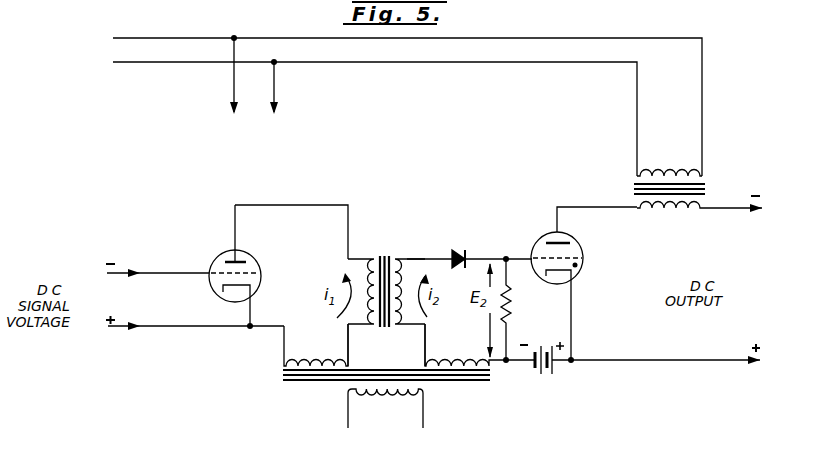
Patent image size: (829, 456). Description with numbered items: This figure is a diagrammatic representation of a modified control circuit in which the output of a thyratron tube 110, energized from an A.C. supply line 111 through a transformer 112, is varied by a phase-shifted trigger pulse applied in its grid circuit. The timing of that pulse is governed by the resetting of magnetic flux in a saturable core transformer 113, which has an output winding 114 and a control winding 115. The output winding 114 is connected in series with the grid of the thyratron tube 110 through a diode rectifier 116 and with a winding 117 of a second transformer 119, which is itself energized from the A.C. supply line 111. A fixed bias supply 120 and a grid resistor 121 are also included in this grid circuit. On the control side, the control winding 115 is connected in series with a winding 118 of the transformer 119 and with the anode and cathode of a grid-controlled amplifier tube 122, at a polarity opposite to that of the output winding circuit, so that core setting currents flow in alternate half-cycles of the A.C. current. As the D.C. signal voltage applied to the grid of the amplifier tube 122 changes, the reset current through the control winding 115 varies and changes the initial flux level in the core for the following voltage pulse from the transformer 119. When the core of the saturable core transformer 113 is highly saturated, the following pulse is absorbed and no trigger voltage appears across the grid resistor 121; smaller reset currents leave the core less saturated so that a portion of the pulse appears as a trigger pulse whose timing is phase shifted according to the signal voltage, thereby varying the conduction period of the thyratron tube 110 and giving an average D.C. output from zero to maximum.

The thyratron tube 110 is at (583, 262).
The A.C. supply line 111 is at (110, 29).
The transformer 112 is at (705, 188).
The saturable core transformer 113 is at (386, 258).
The output winding 114 is at (405, 262).
The control winding 115 is at (365, 259).
The diode rectifier 116 is at (456, 252).
The winding 117 is at (452, 362).
The winding 118 is at (302, 362).
The transformer 119 is at (491, 378).
The fixed bias supply 120 is at (548, 371).
The grid resistor 121 is at (511, 296).
The grid-controlled amplifier tube 122 is at (259, 265).